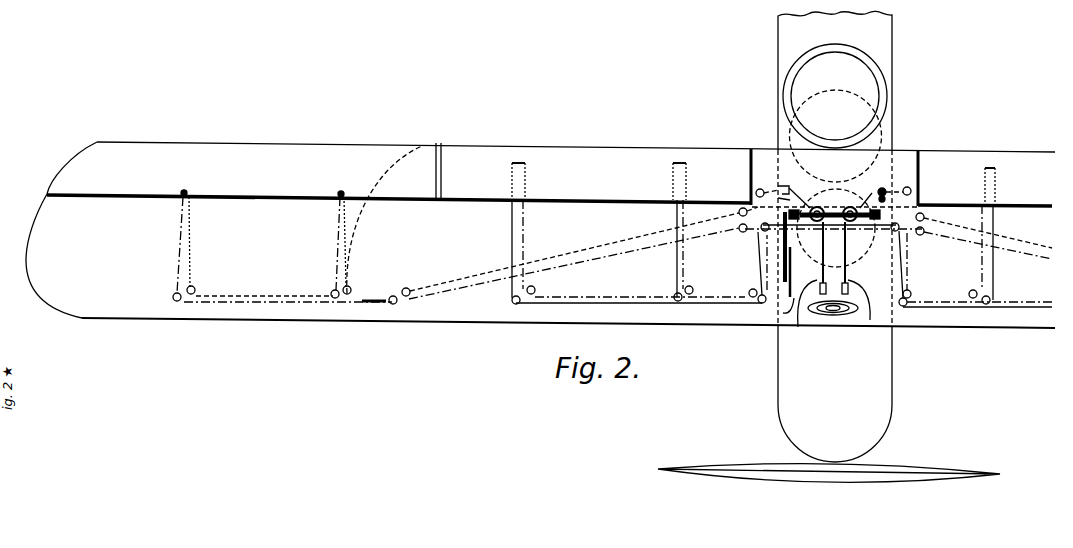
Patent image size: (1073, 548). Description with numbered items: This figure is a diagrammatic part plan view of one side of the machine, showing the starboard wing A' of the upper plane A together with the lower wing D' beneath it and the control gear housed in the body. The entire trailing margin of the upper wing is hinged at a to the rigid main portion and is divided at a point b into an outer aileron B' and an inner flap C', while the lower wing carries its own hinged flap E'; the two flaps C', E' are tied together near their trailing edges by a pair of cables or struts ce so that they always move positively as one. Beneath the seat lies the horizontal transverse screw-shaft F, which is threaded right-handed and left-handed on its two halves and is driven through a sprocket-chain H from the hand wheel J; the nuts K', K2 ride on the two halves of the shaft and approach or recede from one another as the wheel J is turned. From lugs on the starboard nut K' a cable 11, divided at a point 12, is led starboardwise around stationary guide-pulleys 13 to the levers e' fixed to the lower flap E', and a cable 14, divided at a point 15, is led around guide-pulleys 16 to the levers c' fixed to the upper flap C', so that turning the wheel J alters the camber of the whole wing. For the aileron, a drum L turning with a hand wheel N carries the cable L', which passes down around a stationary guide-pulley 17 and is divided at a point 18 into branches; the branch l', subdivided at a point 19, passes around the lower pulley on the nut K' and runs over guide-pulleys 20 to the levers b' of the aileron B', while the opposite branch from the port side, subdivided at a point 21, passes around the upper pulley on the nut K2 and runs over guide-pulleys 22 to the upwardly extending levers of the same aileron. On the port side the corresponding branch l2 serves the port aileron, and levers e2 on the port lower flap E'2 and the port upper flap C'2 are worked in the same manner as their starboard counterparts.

The upper plane A is at (829, 246).
The wing of the upper plane A' is at (91, 324).
The aileron B' is at (192, 131).
The dividing point b is at (437, 159).
The lever b' is at (282, 229).
The hinge a is at (424, 203).
The cable or strut ce is at (518, 162).
The flap C' is at (587, 126).
The flap E' is at (597, 135).
The lever c' is at (616, 188).
The lever e' is at (583, 188).
The wing of the lower plane D' is at (364, 219).
The cable branch l' is at (397, 260).
The cable 11 is at (511, 237).
The dividing point 12 is at (726, 310).
The stationary guide-pulley 13 is at (514, 303).
The cable 14 is at (524, 237).
The dividing point 15 is at (747, 299).
The stationary guide-pulley 16 is at (535, 291).
The stationary guide-pulley 17 is at (807, 327).
The dividing point 18 is at (822, 246).
The subdivision point 19 is at (378, 299).
The stationary guide-pulley 20 is at (195, 289).
The subdivision point 21 is at (374, 304).
The stationary guide-pulley 22 is at (173, 297).
The screw-shaft F is at (833, 178).
The starboard nut K' is at (806, 190).
The port nut K2 is at (850, 207).
The sprocket-chain H is at (788, 238).
The cable L' is at (805, 272).
The hand wheel J is at (786, 311).
The drum L is at (833, 323).
The hand wheel N is at (843, 312).
The cable branch l2 is at (1028, 245).
The lever e2 is at (996, 200).
The flap C'2 is at (1040, 129).
The flap E'2 is at (1048, 138).